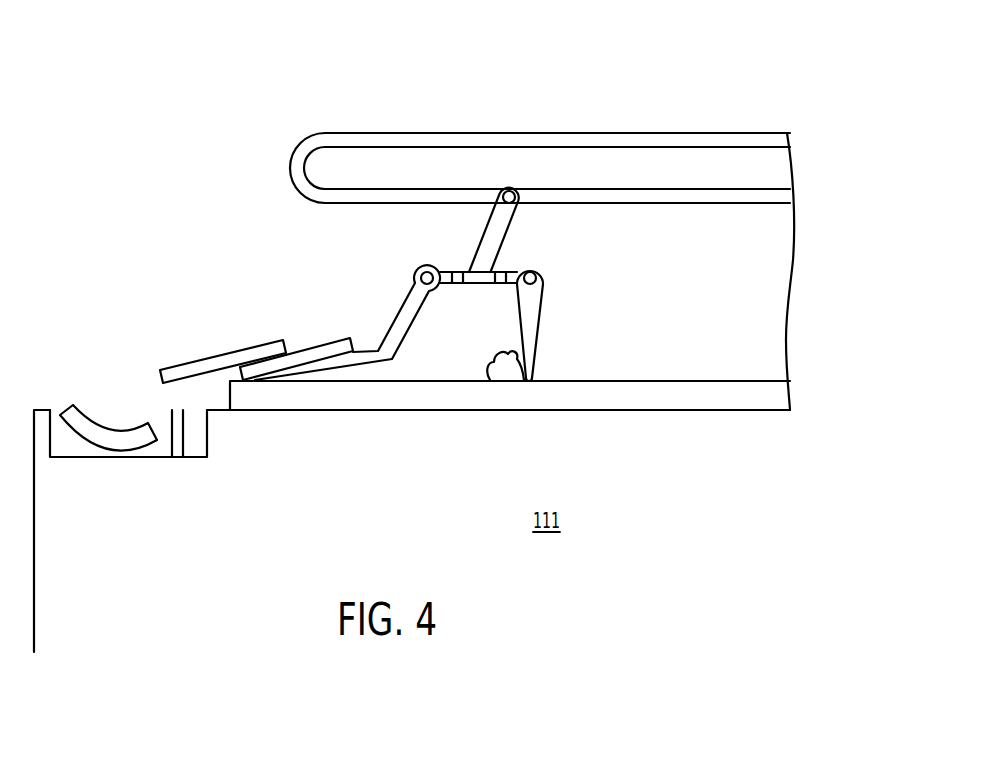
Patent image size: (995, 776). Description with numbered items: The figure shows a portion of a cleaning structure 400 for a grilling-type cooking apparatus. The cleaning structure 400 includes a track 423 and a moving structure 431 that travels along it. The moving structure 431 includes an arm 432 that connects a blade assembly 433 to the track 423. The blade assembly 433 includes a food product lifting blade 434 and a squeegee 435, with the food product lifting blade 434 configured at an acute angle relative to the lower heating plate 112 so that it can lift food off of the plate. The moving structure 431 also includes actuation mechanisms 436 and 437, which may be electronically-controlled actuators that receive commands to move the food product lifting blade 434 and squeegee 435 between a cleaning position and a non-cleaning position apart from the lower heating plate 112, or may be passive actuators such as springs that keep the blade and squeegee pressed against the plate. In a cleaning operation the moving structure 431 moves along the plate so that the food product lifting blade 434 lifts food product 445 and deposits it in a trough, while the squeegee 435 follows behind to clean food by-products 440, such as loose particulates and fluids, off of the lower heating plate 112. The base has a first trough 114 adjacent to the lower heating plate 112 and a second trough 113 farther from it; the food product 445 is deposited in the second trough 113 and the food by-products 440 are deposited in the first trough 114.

The cleaning structure 400 is at (684, 88).
The track 423 is at (405, 132).
The moving structure 431 is at (690, 273).
The arm 432 is at (503, 219).
The blade assembly 433 is at (570, 362).
The food product lifting blade 434 is at (402, 310).
The squeegee 435 is at (531, 312).
The actuation mechanism 436 is at (454, 271).
The actuation mechanism 437 is at (501, 285).
The food by-products 440 is at (503, 373).
The food product 445 is at (218, 346).
The lower heating plate 112 is at (705, 400).
The second trough 113 is at (80, 456).
The first trough 114 is at (193, 456).